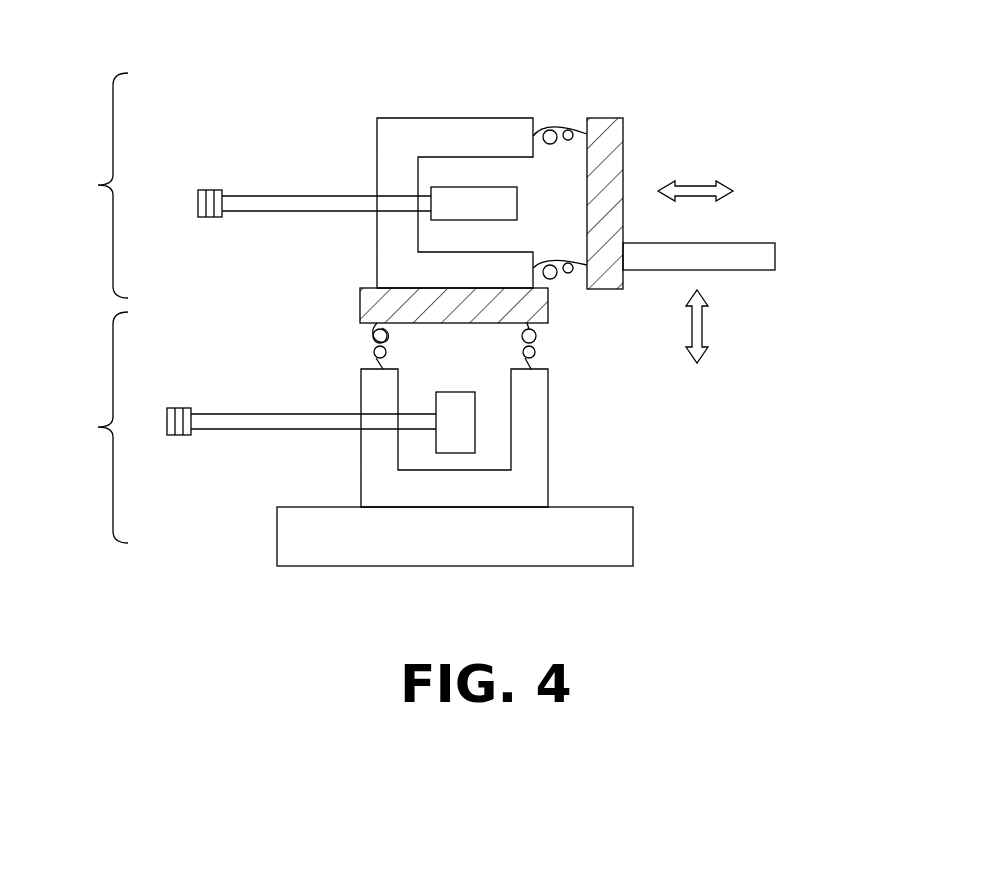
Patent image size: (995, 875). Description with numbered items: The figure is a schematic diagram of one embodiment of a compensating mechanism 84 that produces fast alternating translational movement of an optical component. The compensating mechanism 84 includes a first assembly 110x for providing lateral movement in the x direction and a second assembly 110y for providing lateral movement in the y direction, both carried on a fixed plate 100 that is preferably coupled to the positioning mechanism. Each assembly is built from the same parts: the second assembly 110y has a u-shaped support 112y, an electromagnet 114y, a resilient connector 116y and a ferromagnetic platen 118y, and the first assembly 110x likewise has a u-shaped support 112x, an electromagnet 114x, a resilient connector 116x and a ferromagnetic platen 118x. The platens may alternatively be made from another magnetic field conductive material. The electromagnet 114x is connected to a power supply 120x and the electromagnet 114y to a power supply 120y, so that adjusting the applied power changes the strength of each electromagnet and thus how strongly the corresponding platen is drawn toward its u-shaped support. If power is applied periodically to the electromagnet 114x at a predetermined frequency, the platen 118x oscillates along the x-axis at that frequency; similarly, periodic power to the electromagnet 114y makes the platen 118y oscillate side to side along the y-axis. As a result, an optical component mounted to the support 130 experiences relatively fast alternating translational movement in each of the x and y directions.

The compensating mechanism 84 is at (710, 51).
The first assembly 110x is at (79, 185).
The second assembly 110y is at (79, 427).
The u-shaped support 112x is at (397, 118).
The electromagnet 114x is at (457, 187).
The resilient connector 116x is at (566, 128).
The ferromagnetic platen 118x is at (623, 143).
The power supply 120x is at (208, 190).
The support 130 is at (775, 256).
The ferromagnetic platen 118y is at (548, 300).
The resilient connector 116y is at (370, 360).
The electromagnet 114y is at (475, 421).
The u-shaped support 112y is at (548, 481).
The power supply 120y is at (178, 408).
The fixed plate 100 is at (633, 541).